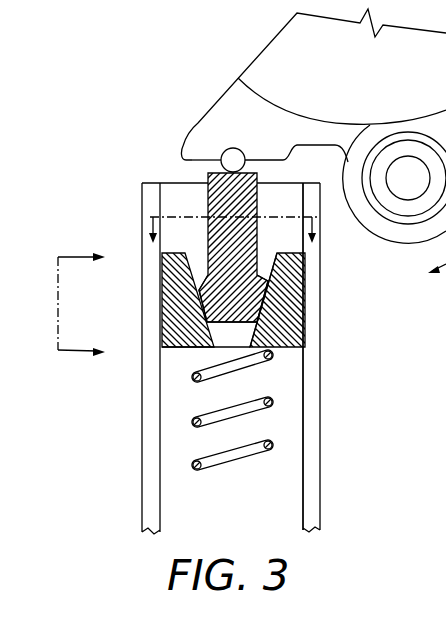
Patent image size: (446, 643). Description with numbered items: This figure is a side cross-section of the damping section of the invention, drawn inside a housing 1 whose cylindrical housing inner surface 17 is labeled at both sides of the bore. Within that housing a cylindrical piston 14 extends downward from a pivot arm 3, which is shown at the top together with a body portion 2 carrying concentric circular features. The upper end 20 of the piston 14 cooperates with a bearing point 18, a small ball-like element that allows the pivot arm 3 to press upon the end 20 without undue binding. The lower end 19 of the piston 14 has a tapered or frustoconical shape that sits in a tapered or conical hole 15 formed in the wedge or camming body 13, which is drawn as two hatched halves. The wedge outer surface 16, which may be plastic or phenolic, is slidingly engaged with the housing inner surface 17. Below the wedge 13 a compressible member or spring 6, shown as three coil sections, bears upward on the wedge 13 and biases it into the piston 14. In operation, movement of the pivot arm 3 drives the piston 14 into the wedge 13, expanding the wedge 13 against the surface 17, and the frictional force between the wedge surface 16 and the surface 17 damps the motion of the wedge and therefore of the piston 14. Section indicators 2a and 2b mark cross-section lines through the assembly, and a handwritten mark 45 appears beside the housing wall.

The housing tube 1 is at (327, 453).
The body boss 2 is at (408, 172).
The pivot arm 3 is at (222, 92).
The spring 6 is at (262, 463).
The wedge 13 is at (175, 352).
The piston 14 is at (235, 290).
The tapered hole 15 is at (233, 342).
The wedge outer surface 16 is at (307, 328).
The housing inner surface 17 is at (307, 336).
The bearing point 18 is at (230, 156).
The piston end 19 is at (240, 308).
The piston end 20 is at (258, 210).
The annotation 45 is at (283, 345).
The section line 2a is at (233, 233).
The section line 2b is at (95, 304).